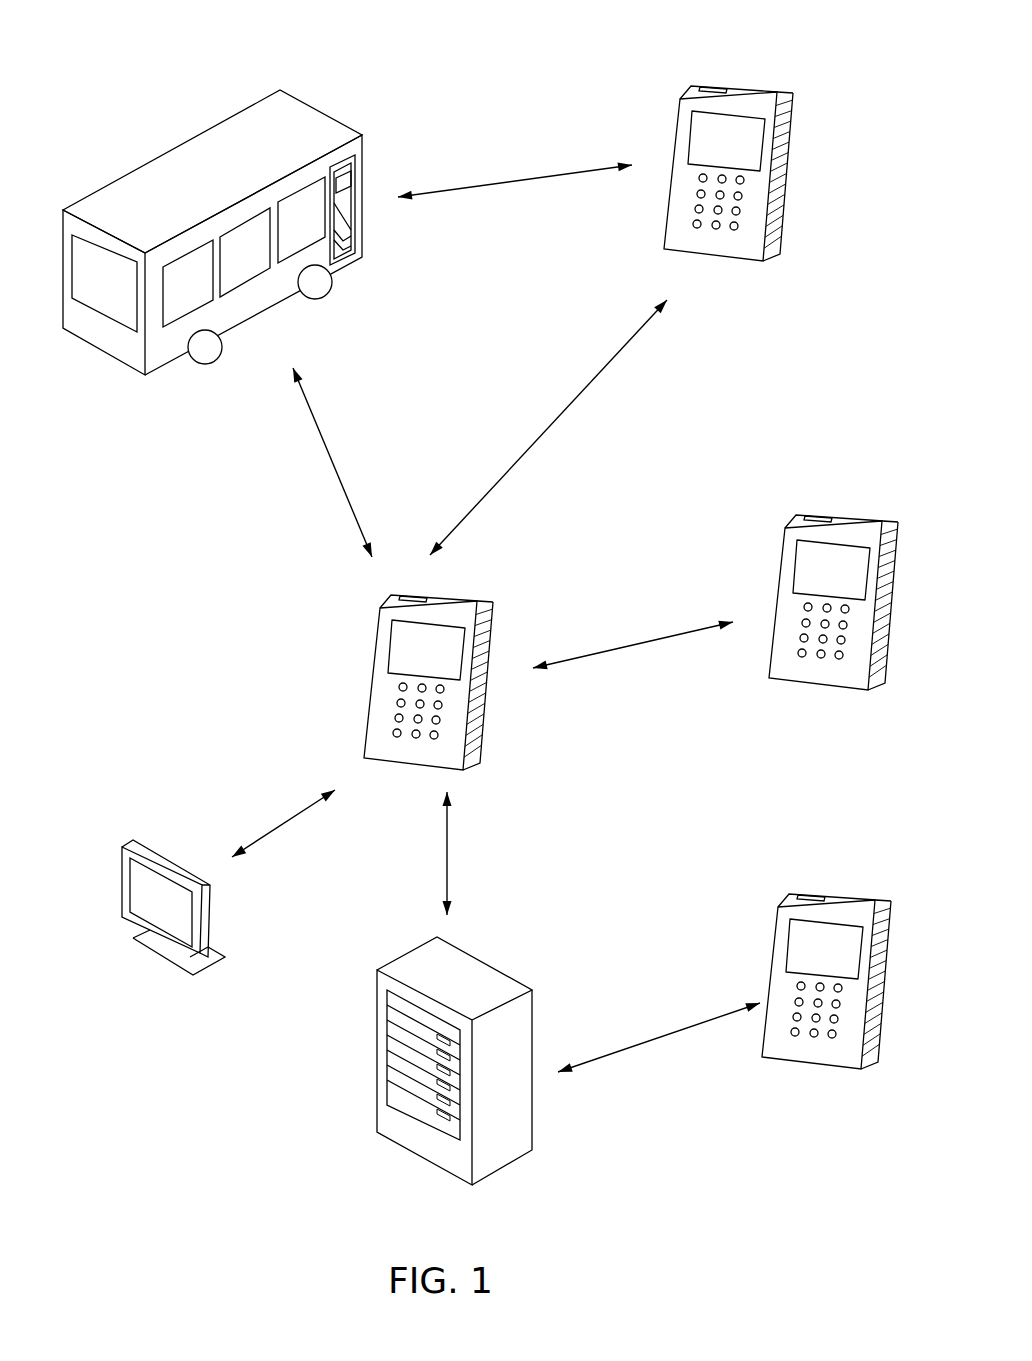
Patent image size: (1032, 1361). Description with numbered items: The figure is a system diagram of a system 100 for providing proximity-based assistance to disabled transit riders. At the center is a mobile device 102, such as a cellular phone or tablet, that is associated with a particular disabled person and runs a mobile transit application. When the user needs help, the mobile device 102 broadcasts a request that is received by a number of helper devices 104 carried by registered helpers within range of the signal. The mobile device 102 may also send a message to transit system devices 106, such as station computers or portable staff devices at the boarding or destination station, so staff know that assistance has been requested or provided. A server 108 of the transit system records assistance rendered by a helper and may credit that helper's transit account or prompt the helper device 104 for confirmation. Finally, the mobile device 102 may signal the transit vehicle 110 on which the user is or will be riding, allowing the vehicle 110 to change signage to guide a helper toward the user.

The system 100 is at (144, 1162).
The mobile device 102 is at (365, 605).
The helper device 104 is at (663, 98).
The transit system device 106 is at (127, 843).
The server 108 is at (377, 1073).
The transit vehicle 110 is at (207, 257).